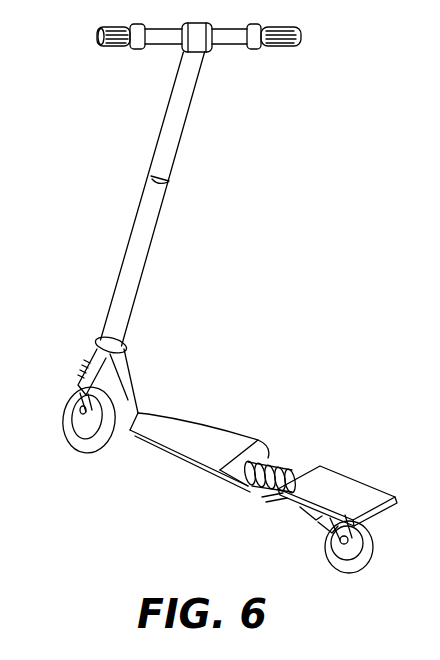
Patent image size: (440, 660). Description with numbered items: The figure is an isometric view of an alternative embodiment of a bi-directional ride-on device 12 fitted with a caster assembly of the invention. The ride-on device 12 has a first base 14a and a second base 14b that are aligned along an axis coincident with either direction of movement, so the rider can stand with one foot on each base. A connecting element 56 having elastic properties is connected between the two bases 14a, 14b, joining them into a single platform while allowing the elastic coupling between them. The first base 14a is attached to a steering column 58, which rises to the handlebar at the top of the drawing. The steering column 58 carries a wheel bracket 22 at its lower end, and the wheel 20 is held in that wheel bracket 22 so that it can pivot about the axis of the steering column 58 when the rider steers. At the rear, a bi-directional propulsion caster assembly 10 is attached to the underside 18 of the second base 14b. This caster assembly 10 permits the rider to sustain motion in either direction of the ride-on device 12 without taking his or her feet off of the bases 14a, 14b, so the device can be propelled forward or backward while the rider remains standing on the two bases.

The bi-directional ride-on device 12 is at (74, 156).
The steering column 58 is at (170, 114).
The wheel bracket 22 is at (86, 374).
The wheel 20 is at (83, 448).
The first base 14a is at (196, 428).
The connecting element 56 is at (276, 468).
The second base 14b is at (323, 485).
The bi-directional propulsion caster assembly 10 is at (330, 528).
The underside 18 is at (390, 500).